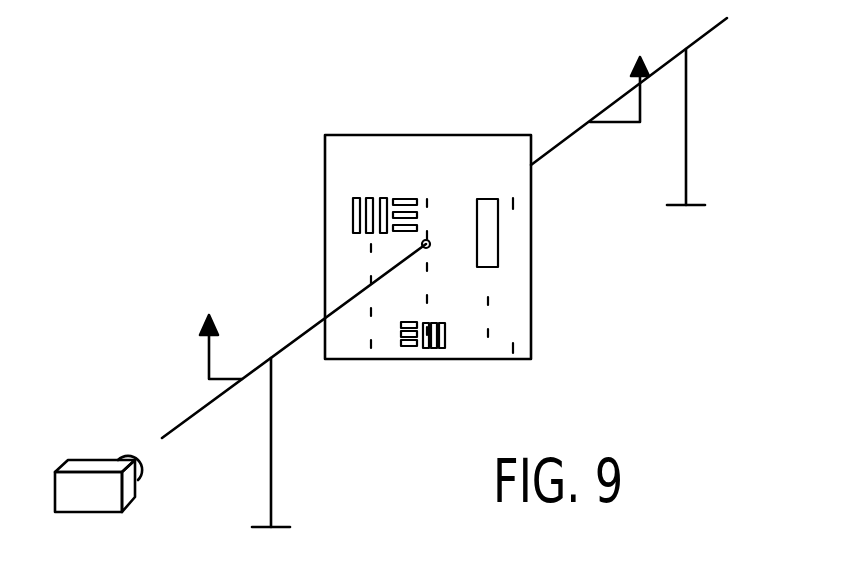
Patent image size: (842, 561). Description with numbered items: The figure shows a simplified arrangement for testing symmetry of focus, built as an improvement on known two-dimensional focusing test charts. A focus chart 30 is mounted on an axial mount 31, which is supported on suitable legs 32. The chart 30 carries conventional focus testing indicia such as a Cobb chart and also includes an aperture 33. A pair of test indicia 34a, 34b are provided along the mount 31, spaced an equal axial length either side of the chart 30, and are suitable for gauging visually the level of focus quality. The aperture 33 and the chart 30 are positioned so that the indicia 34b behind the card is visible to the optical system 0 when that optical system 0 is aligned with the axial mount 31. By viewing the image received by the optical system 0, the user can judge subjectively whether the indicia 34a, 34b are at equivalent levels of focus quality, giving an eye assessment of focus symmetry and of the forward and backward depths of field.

The optical system 0 is at (78, 488).
The focus chart 30 is at (531, 325).
The axial mount 31 is at (713, 32).
The legs 32 is at (686, 152).
The aperture 33 is at (488, 235).
The test indicia 34a is at (205, 322).
The test indicia 34b is at (633, 70).